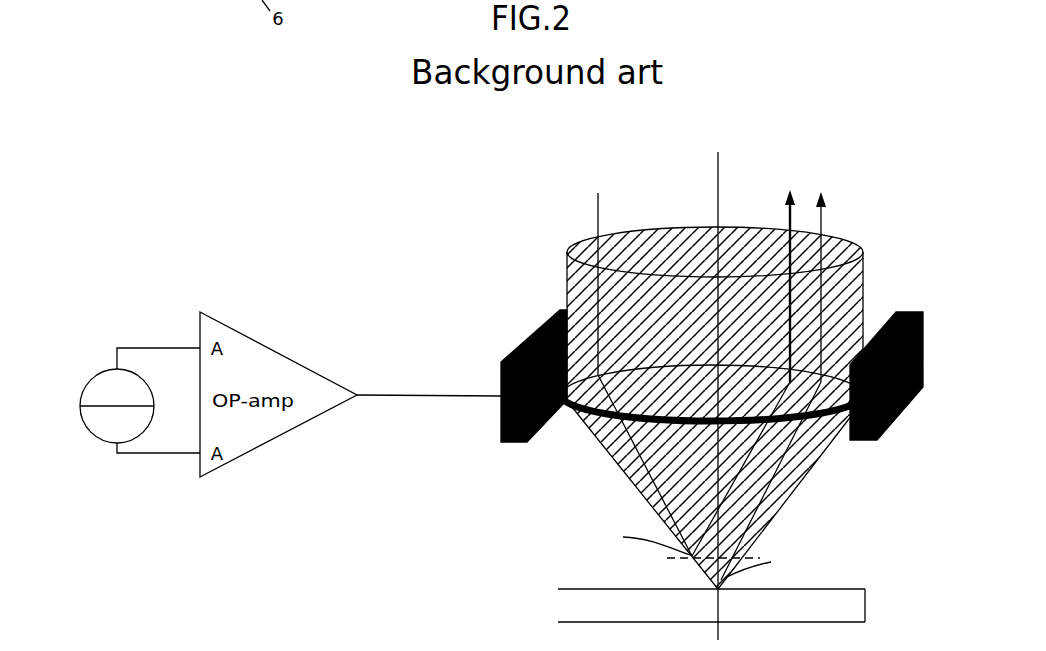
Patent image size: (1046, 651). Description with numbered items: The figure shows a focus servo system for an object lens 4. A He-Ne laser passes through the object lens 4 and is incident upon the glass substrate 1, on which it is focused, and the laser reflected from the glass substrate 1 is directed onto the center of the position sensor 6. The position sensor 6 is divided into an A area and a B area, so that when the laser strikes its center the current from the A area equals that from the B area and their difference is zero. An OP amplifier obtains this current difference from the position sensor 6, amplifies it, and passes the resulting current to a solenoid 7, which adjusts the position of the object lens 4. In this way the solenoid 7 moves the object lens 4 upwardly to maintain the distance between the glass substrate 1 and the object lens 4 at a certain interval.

The glass substrate 1 is at (855, 603).
The object lens 4 is at (598, 442).
The position sensor 6 is at (104, 380).
The solenoid 7 is at (549, 425).